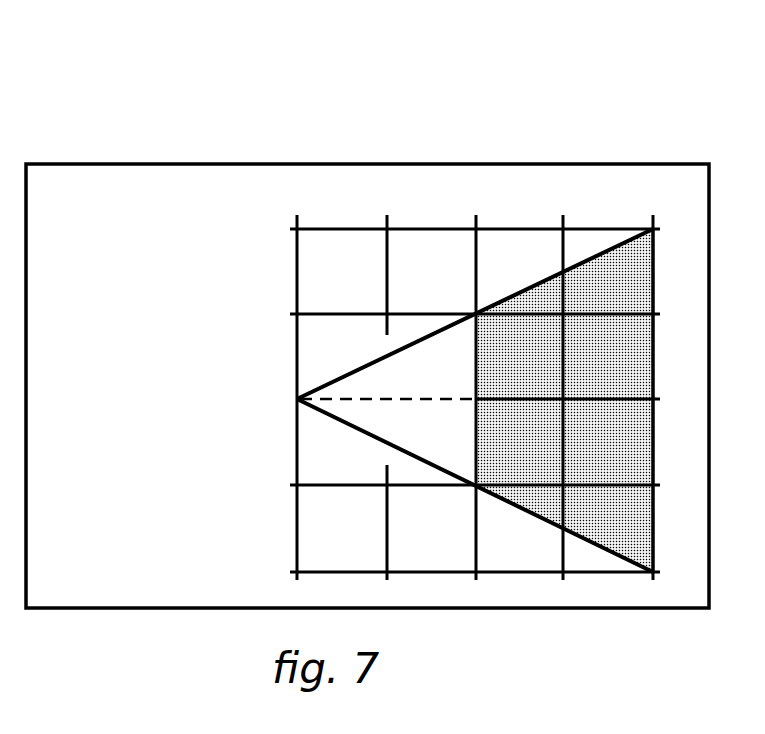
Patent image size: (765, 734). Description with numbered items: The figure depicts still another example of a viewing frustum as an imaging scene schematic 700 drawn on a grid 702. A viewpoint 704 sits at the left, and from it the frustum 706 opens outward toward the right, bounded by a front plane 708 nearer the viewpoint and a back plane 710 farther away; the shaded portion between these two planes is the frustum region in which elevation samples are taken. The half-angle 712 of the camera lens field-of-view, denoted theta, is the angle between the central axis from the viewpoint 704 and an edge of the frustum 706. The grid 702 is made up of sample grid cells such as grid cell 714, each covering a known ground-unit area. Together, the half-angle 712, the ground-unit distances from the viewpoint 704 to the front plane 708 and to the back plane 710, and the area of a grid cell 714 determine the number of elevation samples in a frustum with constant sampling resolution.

The imaging scene schematic 700 is at (431, 155).
The grid 702 is at (297, 572).
The viewpoint 704 is at (297, 399).
The frustum 706 is at (600, 283).
The front plane 708 is at (476, 347).
The back plane 710 is at (653, 265).
The half-angle 712 is at (375, 363).
The grid cell 714 is at (368, 534).